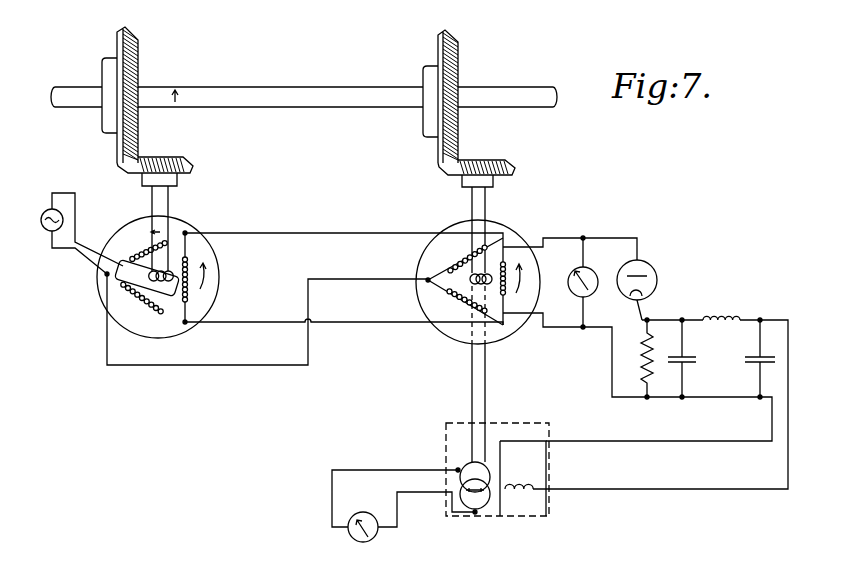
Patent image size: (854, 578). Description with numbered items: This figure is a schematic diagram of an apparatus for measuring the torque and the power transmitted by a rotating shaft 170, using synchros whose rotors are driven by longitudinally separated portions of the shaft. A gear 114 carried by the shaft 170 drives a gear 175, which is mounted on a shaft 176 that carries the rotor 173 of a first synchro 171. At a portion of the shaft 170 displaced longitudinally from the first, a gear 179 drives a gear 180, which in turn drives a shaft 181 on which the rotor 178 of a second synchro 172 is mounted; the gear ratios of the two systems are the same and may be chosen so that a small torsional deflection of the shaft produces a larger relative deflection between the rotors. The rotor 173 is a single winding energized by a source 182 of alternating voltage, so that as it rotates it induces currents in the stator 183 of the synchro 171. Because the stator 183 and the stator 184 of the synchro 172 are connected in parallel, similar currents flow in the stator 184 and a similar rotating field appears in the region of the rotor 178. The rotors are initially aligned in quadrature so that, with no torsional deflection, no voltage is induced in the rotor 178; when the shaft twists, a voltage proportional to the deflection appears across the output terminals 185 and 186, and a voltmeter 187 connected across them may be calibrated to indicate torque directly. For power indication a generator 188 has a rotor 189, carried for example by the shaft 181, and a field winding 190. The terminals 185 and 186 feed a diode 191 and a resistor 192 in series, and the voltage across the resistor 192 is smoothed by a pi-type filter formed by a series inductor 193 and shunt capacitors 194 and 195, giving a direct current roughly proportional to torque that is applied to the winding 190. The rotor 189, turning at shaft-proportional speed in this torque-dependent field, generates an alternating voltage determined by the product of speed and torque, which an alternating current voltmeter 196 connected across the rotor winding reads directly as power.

The bevel gear on shaft 114 is at (136, 30).
The rotating shaft 170 is at (275, 91).
The gear 175 is at (188, 161).
The shaft 176 is at (158, 204).
The synchro 171 is at (221, 281).
The rotor 173 is at (170, 314).
The source of alternating voltage 182 is at (43, 229).
The stator 183 is at (190, 258).
The gear 179 is at (453, 36).
The gear 180 is at (512, 172).
The shaft 181 is at (481, 207).
The synchro 172 is at (457, 222).
The stator 184 is at (452, 262).
The rotor 178 is at (506, 295).
The output terminal 185 is at (587, 236).
The output terminal 186 is at (583, 329).
The voltmeter 187 is at (595, 270).
The diode 191 is at (657, 272).
The resistor 192 is at (643, 362).
The series inductor 193 is at (721, 316).
The shunt capacitor 194 is at (690, 358).
The shunt capacitor 195 is at (757, 364).
The generator 188 is at (525, 423).
The rotor 189 is at (487, 491).
The field winding 190 is at (523, 478).
The alternating current voltmeter 196 is at (364, 543).